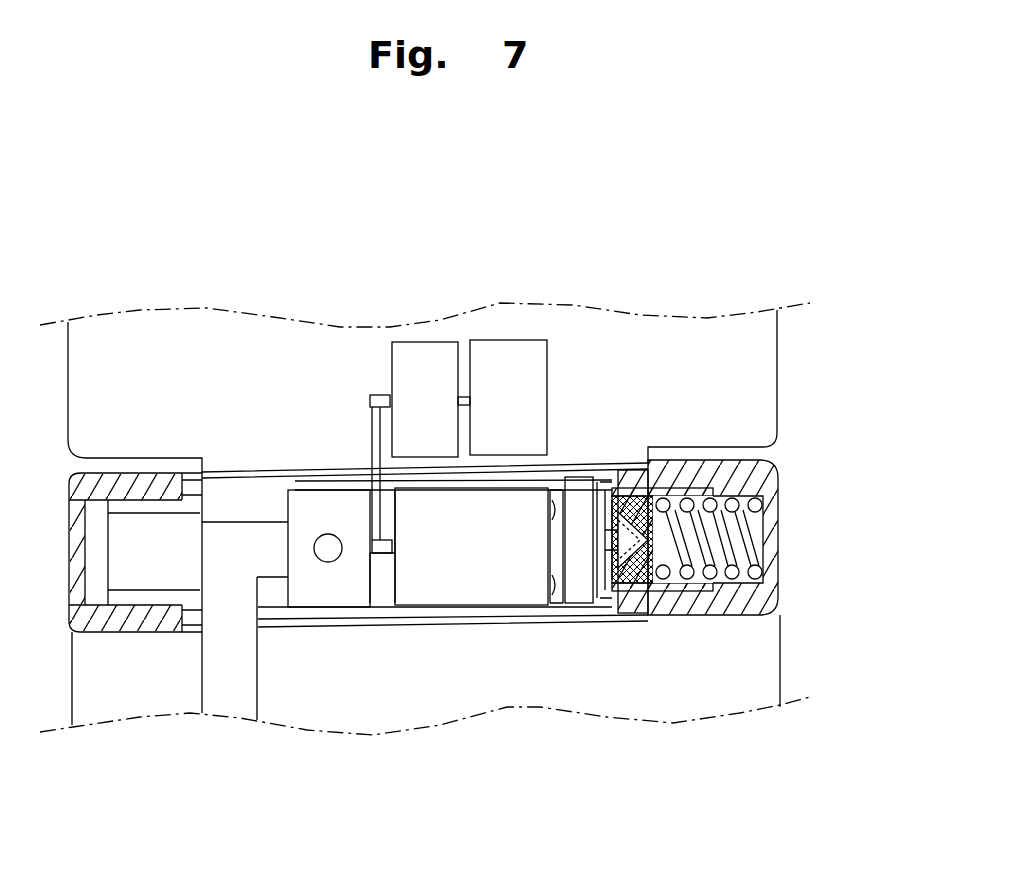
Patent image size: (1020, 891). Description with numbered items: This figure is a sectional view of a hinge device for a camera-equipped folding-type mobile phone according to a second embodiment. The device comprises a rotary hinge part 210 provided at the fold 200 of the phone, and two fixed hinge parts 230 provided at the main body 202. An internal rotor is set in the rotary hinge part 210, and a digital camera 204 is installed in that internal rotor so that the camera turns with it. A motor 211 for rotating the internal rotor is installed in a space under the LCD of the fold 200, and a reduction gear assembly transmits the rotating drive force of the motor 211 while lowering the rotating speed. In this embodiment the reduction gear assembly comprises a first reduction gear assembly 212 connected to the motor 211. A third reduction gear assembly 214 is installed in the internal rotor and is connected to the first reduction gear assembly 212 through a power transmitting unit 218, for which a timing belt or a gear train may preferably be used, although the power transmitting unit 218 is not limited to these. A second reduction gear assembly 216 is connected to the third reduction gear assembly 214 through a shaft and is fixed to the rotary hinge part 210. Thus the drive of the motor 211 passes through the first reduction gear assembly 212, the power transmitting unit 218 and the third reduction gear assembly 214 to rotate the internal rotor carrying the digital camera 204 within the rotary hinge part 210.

The fold 200 is at (162, 330).
The main body 202 is at (450, 713).
The digital camera 204 is at (322, 598).
The rotary hinge part 210 is at (618, 465).
The motor 211 is at (513, 352).
The first reduction gear assembly 212 is at (432, 352).
The third reduction gear assembly 214 is at (493, 587).
The second reduction gear assembly 216 is at (583, 592).
The power transmitting unit 218 is at (370, 417).
The fixed hinge part 230 is at (773, 575).